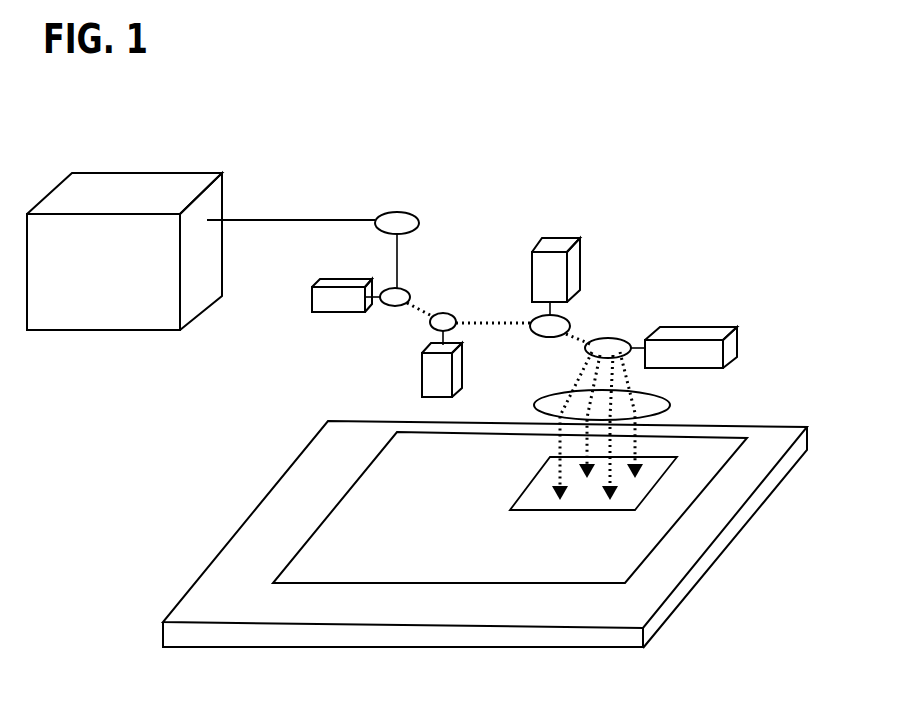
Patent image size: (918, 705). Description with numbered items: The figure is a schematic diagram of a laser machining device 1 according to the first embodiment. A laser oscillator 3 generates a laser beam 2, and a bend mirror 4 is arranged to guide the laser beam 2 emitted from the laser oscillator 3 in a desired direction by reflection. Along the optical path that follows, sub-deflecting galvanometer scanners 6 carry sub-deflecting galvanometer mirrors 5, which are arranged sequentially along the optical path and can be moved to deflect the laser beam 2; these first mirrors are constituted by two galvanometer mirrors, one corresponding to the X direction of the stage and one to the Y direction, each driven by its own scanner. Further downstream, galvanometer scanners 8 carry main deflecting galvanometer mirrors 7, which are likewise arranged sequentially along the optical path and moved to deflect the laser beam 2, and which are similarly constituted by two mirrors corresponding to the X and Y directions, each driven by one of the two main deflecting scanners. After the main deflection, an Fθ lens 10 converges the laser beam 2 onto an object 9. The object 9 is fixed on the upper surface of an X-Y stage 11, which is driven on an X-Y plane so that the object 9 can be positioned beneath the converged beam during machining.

The laser machining device 1 is at (122, 480).
The laser beam 2 is at (265, 220).
The laser oscillator 3 is at (130, 329).
The bend mirror 4 is at (397, 212).
The sub-deflecting galvanometer mirrors 5 is at (405, 290).
The sub-deflecting galvanometer scanners 6 is at (430, 357).
The main deflecting galvanometer mirrors 7 is at (587, 347).
The galvanometer scanners 8 is at (573, 278).
The object 9 is at (445, 565).
The Fθ lens 10 is at (672, 407).
The X-Y stage 11 is at (697, 577).